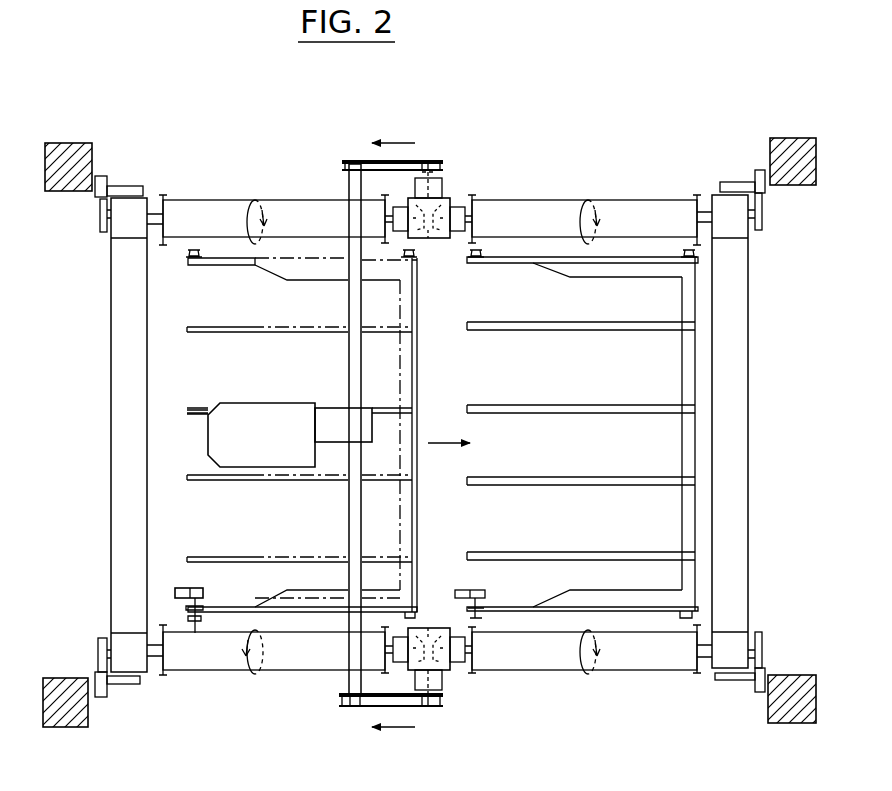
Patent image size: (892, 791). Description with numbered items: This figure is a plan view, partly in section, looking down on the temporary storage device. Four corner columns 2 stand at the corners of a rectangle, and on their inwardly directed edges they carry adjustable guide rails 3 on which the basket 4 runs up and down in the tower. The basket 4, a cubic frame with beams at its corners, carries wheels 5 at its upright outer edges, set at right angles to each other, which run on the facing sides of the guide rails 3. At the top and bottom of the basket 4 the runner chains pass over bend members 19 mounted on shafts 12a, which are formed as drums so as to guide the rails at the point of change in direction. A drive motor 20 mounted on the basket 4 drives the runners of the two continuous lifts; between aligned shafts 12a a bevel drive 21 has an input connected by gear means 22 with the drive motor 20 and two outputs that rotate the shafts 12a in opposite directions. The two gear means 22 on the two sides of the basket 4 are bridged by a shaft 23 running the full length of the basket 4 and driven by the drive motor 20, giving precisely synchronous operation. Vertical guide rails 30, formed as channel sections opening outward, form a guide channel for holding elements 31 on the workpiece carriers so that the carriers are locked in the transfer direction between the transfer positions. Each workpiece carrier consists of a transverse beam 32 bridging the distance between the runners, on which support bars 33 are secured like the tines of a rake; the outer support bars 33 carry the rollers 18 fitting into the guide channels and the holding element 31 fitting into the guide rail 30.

The corner column 2 is at (78, 143).
The guide rail 3 is at (101, 178).
The basket 4 is at (108, 338).
The wheel 5 is at (127, 187).
The shaft 12a is at (213, 216).
The roller 18 is at (193, 612).
The bend member 19 is at (166, 198).
The drive motor 20 is at (228, 437).
The bevel drive 21 is at (445, 196).
The gear means 22 is at (405, 162).
The shaft 23 is at (352, 357).
The guide rail 30 is at (175, 592).
The holding element 31 is at (197, 608).
The transverse beam 32 is at (690, 380).
The support bar 33 is at (598, 555).